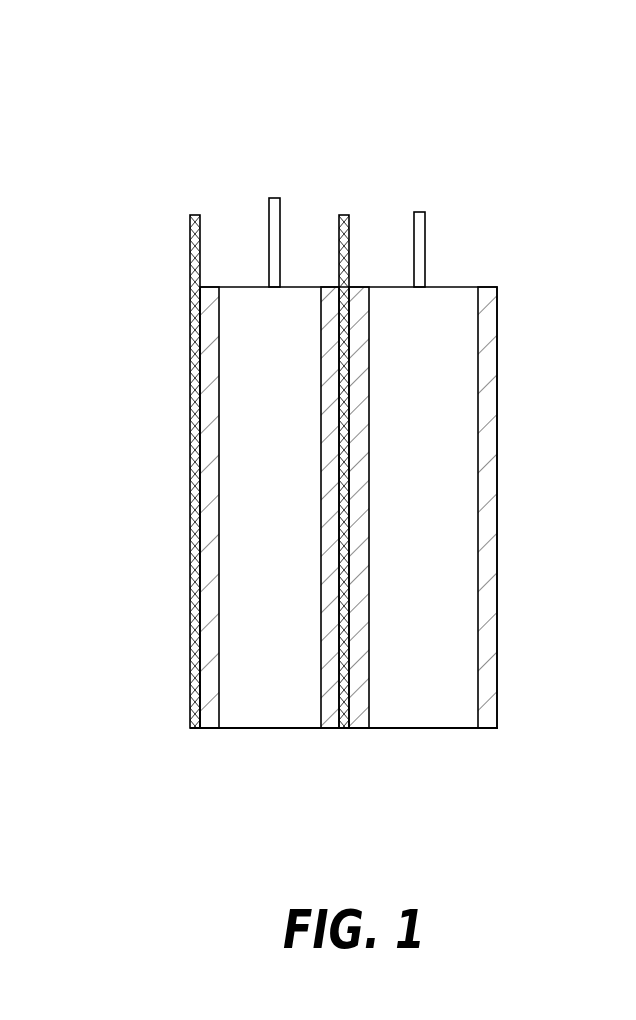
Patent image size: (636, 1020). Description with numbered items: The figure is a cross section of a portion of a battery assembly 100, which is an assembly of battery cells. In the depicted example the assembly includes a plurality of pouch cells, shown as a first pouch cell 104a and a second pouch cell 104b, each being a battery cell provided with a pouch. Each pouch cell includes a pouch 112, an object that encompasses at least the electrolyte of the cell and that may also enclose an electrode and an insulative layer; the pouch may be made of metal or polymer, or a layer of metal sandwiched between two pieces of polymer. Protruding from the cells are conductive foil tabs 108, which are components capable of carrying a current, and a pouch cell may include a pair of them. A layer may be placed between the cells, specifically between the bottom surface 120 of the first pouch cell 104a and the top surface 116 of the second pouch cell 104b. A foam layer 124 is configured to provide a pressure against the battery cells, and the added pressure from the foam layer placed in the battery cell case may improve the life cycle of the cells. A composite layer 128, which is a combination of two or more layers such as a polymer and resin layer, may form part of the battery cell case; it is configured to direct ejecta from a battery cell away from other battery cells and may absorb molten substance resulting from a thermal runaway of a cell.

The battery assembly 100 is at (200, 65).
The first pouch cell 104a is at (255, 518).
The second pouch cell 104b is at (445, 520).
The conductive foil tab 108 is at (271, 198).
The pouch 112 is at (345, 642).
The top surface 116 is at (370, 468).
The bottom surface 120 is at (320, 458).
The foam layer 124 is at (488, 729).
The composite layer 128 is at (340, 232).